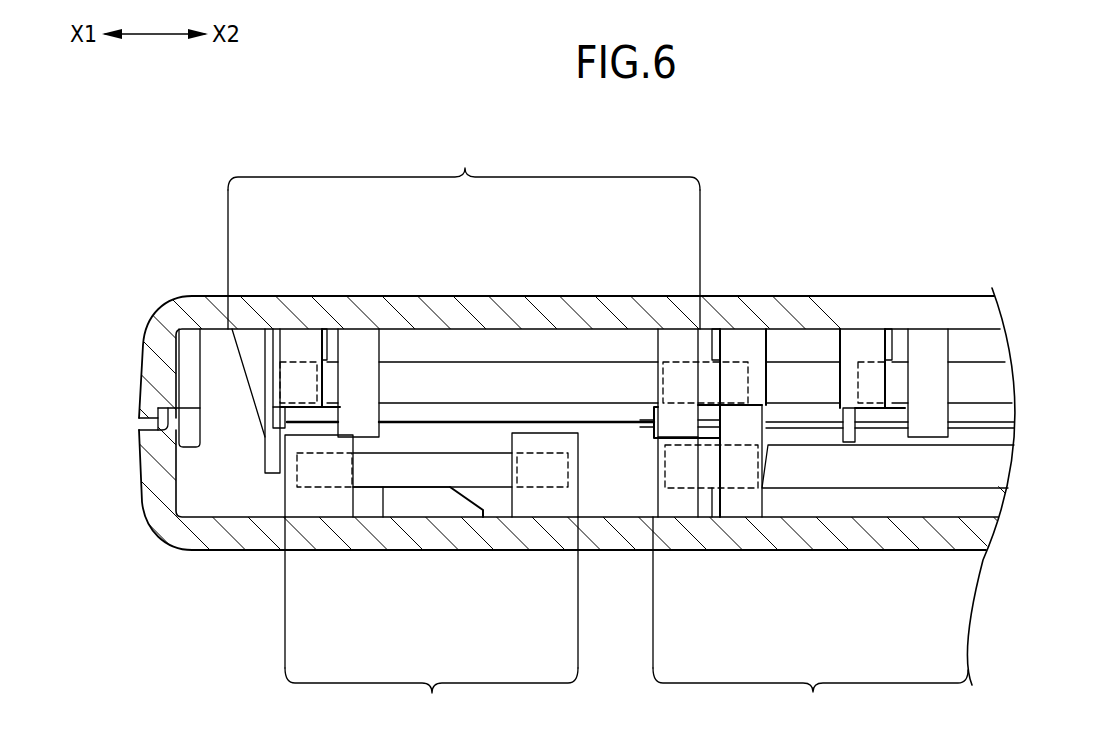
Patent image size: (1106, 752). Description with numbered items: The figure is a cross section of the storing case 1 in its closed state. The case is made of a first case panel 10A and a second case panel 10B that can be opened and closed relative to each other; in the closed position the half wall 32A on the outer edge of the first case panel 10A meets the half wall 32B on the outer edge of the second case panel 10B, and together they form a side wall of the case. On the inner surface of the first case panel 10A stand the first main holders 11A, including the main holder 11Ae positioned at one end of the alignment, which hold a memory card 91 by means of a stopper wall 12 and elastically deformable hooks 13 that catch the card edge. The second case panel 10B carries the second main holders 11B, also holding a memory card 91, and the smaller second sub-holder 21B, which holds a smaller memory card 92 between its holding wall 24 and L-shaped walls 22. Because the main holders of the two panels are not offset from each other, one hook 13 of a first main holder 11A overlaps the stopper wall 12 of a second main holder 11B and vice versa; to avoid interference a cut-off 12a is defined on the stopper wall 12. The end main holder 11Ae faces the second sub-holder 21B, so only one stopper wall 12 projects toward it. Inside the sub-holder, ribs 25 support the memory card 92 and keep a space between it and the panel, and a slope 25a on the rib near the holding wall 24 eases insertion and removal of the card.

The storing case 1 is at (892, 270).
The first case panel 10A is at (937, 308).
The second case panel 10B is at (932, 537).
The first main holder 11A is at (464, 232).
The main holder 11Ae is at (464, 248).
The second main holder 11B is at (810, 623).
The stopper wall 12 is at (293, 345).
The cut-off 12a is at (754, 407).
The hook 13 is at (358, 345).
The second sub-holder 21B is at (431, 623).
The wall 22 is at (318, 507).
The holding wall 24 is at (550, 507).
The rib 25 is at (437, 505).
The slope 25a is at (472, 501).
The half wall 32A is at (155, 367).
The half wall 32B is at (155, 480).
The memory card 91 is at (528, 360).
The memory card 92 is at (395, 490).